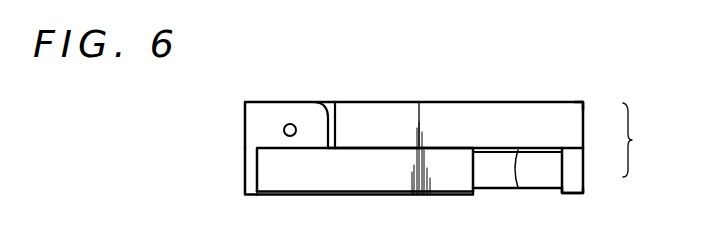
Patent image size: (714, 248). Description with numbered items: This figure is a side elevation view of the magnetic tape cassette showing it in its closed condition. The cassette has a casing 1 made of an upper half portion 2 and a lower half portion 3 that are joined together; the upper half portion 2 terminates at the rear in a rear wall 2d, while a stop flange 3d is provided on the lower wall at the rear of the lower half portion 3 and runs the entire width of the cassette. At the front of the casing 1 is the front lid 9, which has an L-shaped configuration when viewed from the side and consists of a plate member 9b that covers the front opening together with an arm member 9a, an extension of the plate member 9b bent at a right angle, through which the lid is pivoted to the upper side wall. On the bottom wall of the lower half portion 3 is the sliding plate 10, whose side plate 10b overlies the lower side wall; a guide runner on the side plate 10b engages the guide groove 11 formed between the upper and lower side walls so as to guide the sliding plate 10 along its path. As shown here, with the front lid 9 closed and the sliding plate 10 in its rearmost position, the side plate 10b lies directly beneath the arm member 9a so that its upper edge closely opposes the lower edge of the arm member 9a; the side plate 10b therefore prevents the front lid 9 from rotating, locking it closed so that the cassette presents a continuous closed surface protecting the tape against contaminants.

The casing 1 is at (650, 151).
The upper half portion 2 is at (577, 123).
The rear wall 2d is at (585, 103).
The lower half portion 3 is at (578, 169).
The stop flange 3d is at (570, 189).
The front lid 9 is at (245, 128).
The arm member 9a is at (294, 122).
The plate member 9b is at (245, 175).
The sliding plate 10 is at (393, 192).
The side plate 10b is at (309, 192).
The guide groove 11 is at (518, 189).